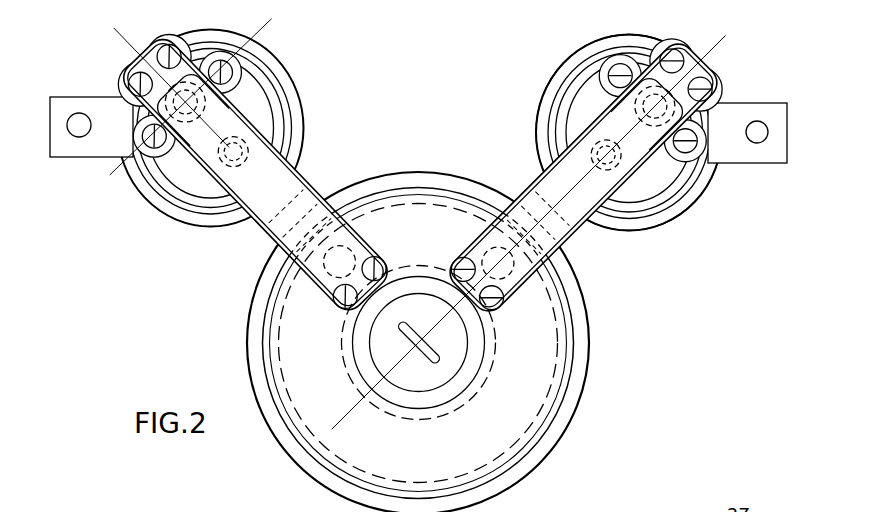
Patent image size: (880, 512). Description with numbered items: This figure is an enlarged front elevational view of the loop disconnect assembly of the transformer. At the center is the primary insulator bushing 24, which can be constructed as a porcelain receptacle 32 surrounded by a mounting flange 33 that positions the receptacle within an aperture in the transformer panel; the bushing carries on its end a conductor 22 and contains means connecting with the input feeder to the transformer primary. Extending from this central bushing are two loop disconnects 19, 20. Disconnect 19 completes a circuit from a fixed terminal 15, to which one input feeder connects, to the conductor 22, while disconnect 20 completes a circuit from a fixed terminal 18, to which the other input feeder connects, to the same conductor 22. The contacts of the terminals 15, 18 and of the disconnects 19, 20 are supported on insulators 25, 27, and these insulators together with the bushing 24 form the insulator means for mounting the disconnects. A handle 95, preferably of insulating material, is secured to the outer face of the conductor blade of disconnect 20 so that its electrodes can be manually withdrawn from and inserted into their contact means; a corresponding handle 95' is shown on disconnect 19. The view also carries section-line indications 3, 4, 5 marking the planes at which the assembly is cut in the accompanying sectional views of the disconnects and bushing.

The fixed terminal 15 is at (62, 97).
The fixed terminal 18 is at (762, 103).
The insulator 25 is at (300, 96).
The insulator 27 is at (560, 66).
The loop disconnect 19 is at (313, 172).
The loop disconnect 20 is at (522, 183).
The handle 95 is at (633, 167).
The arm cover plate (left) 95' is at (209, 167).
The conductor 22 is at (517, 440).
The insulator bushing 24 is at (307, 476).
The receptacle 32 is at (573, 378).
The mounting flange 33 is at (245, 351).
The partition 3 is at (718, 42).
The high voltage side 4 is at (262, 31).
The low voltage side 5 is at (121, 46).